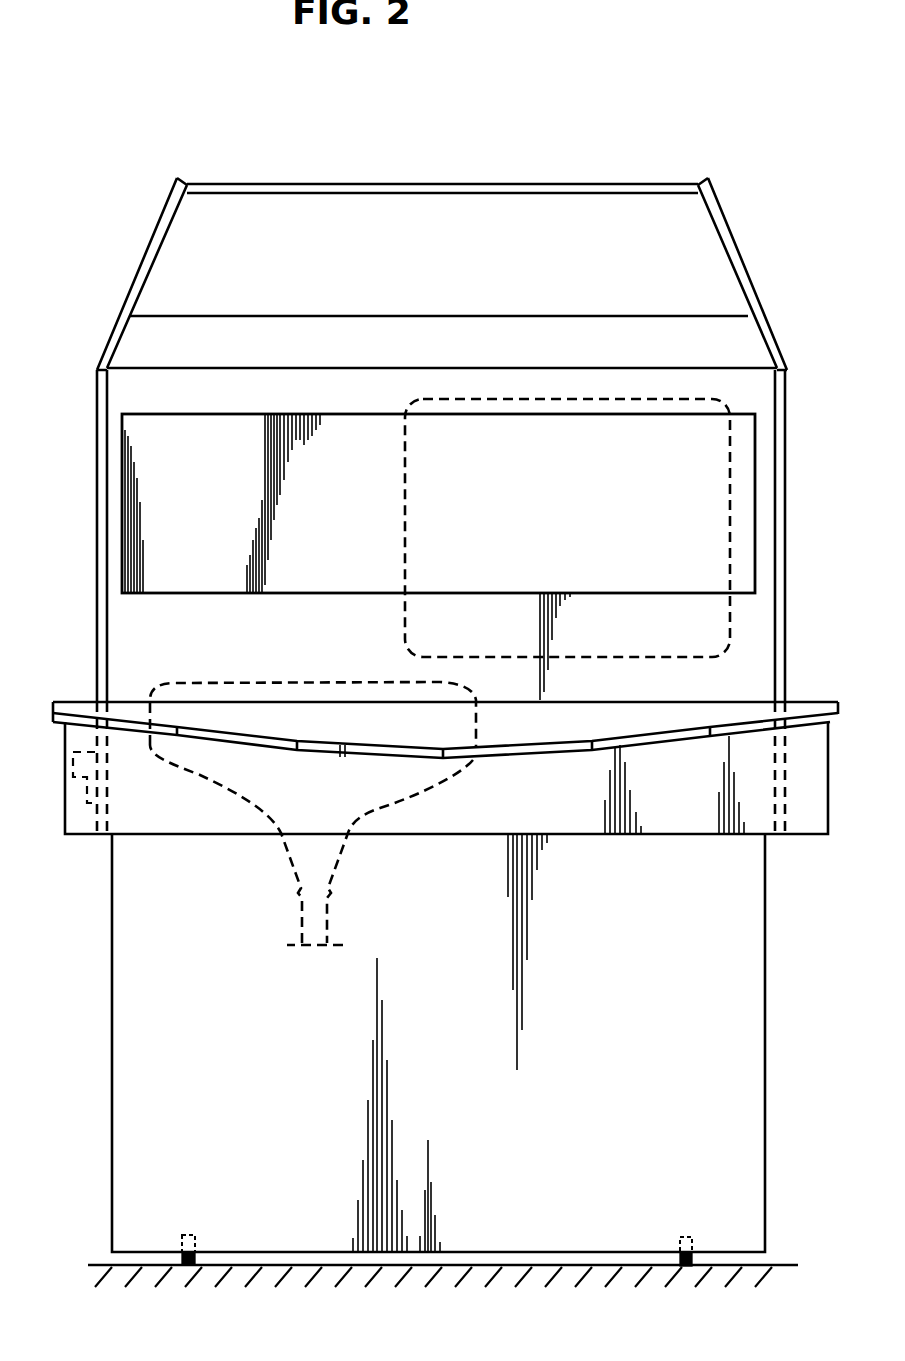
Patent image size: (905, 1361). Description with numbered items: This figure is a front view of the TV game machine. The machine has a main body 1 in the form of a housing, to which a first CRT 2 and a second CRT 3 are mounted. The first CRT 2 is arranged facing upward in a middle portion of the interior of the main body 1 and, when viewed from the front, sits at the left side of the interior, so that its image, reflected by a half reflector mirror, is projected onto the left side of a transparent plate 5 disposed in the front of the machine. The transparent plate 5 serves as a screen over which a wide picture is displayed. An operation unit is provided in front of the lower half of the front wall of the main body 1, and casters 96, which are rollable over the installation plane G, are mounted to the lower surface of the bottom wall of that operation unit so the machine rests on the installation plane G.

The main body 1 is at (458, 182).
The first CRT 2 is at (207, 685).
The second CRT 3 is at (613, 397).
The transparent plate 5 is at (162, 485).
The casters 96 is at (200, 1252).
The installation plane G is at (765, 1268).